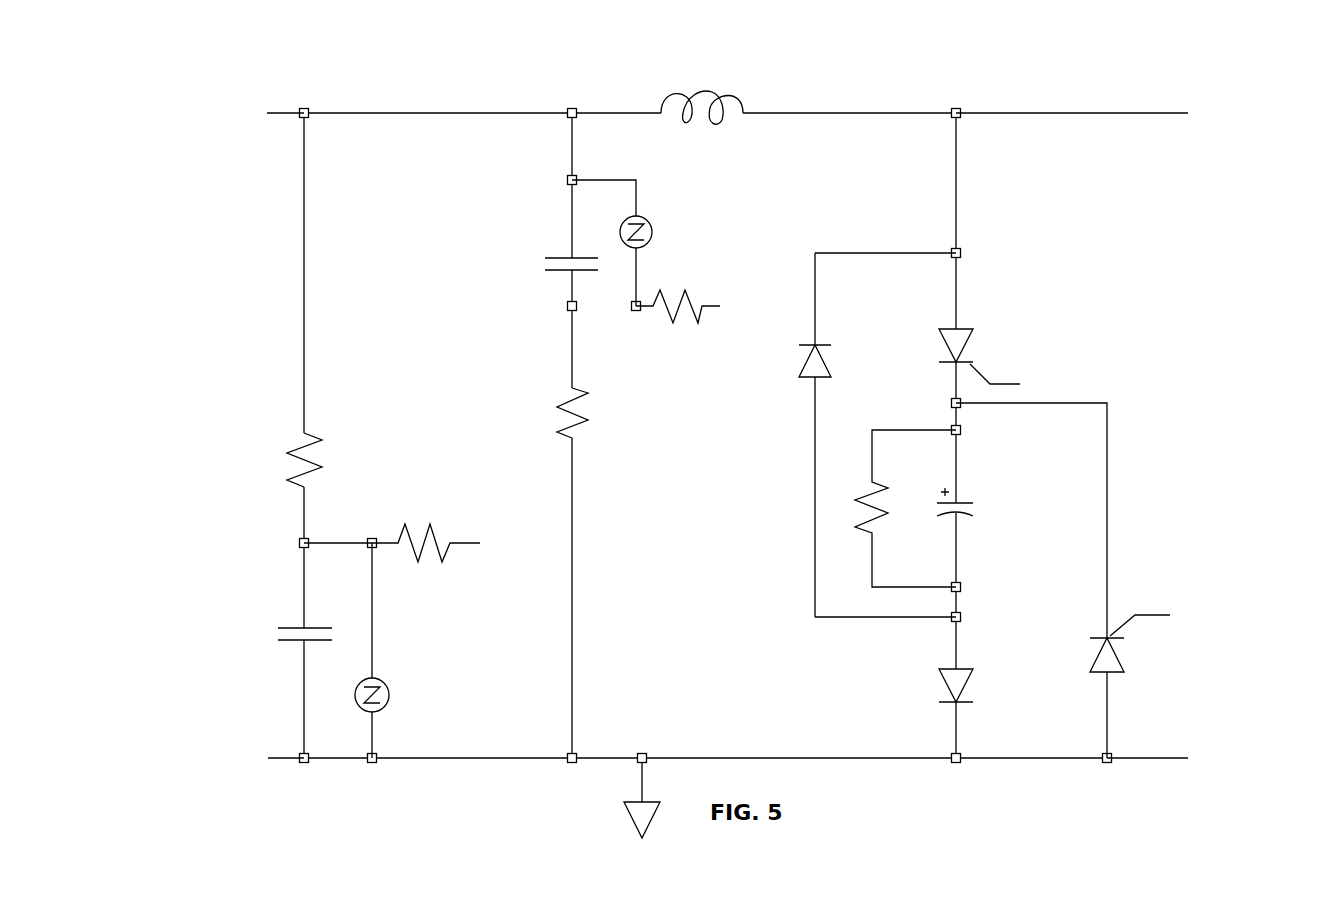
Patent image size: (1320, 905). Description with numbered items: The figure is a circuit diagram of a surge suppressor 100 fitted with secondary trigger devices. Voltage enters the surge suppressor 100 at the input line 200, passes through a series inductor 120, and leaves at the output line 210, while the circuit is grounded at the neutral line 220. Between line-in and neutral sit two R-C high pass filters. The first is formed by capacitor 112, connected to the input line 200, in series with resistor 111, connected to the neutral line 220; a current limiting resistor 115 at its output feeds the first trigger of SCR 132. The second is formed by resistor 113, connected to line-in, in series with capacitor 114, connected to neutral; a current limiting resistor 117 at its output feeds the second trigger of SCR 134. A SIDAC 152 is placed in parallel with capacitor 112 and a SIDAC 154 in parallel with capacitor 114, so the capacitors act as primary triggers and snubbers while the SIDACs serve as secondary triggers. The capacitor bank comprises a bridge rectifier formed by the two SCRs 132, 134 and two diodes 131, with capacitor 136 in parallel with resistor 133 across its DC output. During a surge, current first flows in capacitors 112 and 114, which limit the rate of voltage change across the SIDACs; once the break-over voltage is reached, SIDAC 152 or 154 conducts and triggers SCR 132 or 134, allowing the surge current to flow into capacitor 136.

The surge suppressor 100 is at (1162, 66).
The input line 200 is at (285, 110).
The output line 210 is at (1130, 115).
The neutral line 220 is at (282, 760).
The series inductor 120 is at (703, 96).
The capacitor 112 is at (552, 258).
The SIDAC 152 is at (655, 228).
The current limiting resistor 115 is at (672, 325).
The resistor 111 is at (556, 407).
The resistor 113 is at (288, 453).
The capacitor 114 is at (285, 627).
The current limiting resistor 117 is at (430, 527).
The SIDAC 154 is at (392, 692).
The diode 131 is at (808, 362).
The SCR 132 is at (962, 329).
The resistor 133 is at (858, 500).
The capacitor 136 is at (968, 503).
The SCR 134 is at (1112, 672).